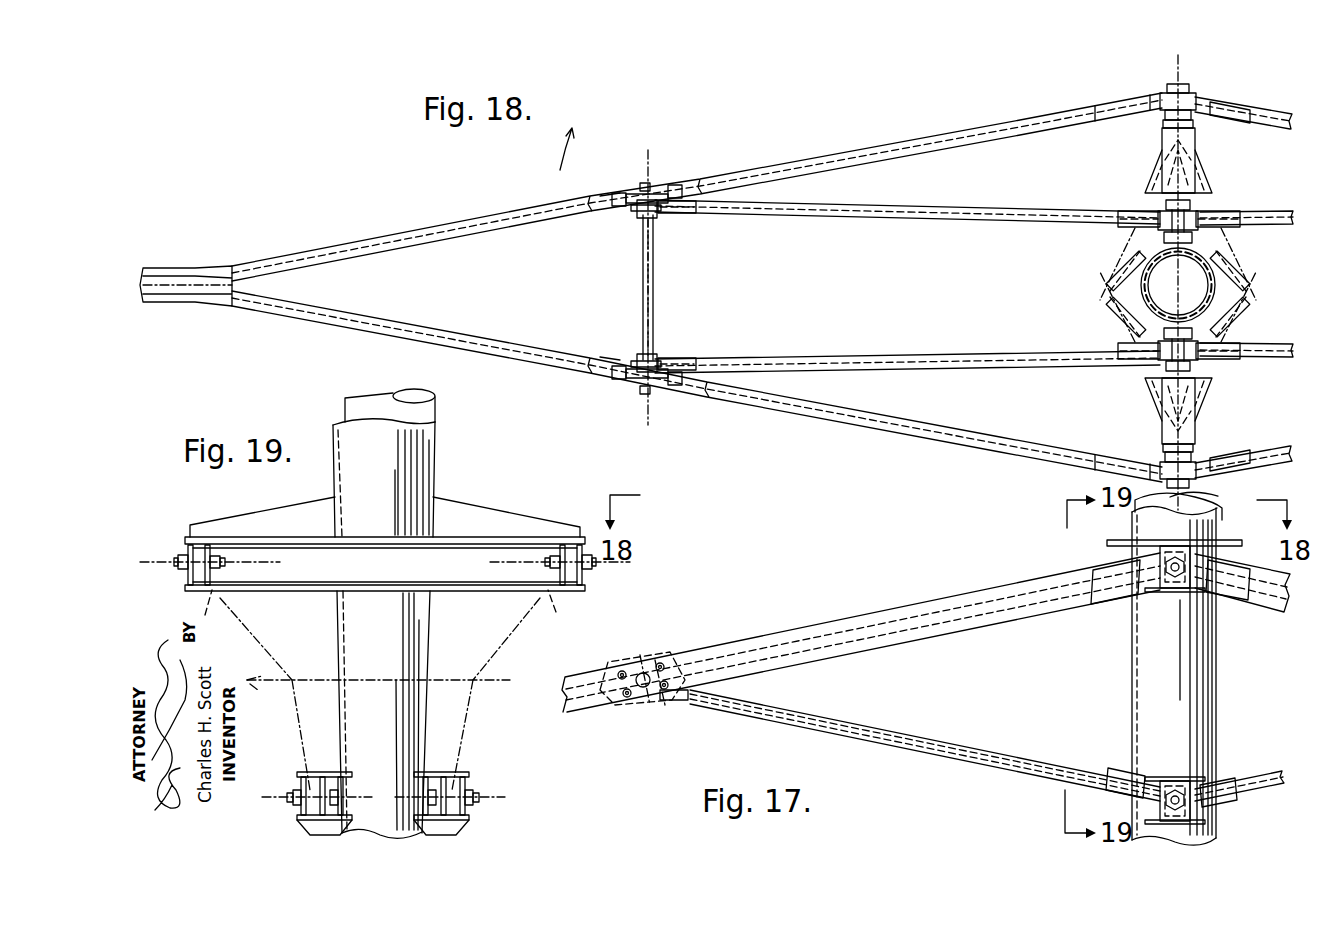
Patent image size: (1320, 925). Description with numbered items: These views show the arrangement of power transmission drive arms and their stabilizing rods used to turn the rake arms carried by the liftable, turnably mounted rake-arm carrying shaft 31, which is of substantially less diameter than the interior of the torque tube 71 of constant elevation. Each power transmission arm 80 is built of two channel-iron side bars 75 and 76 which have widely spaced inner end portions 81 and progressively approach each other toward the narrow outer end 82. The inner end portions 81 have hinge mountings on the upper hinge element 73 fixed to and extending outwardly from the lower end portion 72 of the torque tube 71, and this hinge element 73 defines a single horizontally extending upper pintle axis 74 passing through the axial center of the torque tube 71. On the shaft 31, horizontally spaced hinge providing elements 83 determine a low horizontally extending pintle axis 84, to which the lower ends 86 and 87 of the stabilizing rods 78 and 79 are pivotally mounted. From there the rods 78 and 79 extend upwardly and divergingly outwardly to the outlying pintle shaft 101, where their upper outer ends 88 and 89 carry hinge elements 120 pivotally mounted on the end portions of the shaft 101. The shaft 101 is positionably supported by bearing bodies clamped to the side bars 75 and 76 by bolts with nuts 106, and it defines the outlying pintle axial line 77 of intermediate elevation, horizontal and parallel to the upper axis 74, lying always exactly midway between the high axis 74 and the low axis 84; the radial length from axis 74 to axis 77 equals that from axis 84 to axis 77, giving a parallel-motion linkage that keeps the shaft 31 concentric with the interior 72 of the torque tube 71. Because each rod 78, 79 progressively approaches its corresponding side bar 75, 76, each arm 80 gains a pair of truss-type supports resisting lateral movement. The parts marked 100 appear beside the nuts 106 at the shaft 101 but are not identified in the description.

In FIG. 18, the rake-arm carrying shaft 31 is at (1178, 292).
In FIG. 19, the rake-arm carrying shaft 31 is at (436, 398).
In FIG. 17, the rake-arm carrying shaft 31 is at (1177, 668).
In FIG. 19, the torque tube 71 is at (490, 482).
In FIG. 19, the lower end portion of the torque tube 72 is at (438, 486).
In FIG. 18, the upper hinge element 73 is at (1178, 286).
In FIG. 19, the upper hinge element 73 is at (188, 548).
In FIG. 17, the upper hinge element 73 is at (1175, 595).
In FIG. 18, the upper pintle axis 74 is at (1175, 76).
In FIG. 19, the upper pintle axis 74 is at (162, 565).
In FIG. 17, the upper pintle axis 74 is at (1172, 590).
In FIG. 18, the channel-iron side bar 75 is at (487, 230).
In FIG. 18, the channel-iron side bar 76 is at (482, 338).
In FIG. 18, the outlying pintle axial line 77 is at (648, 173).
In FIG. 19, the outlying pintle axial line 77 is at (258, 678).
In FIG. 17, the outlying pintle axial line 77 is at (648, 692).
In FIG. 18, the stabilizing rod 78 is at (998, 207).
In FIG. 19, the stabilizing rod 78 is at (306, 712).
In FIG. 17, the stabilizing rod 78 is at (916, 736).
In FIG. 18, the stabilizing rod 79 is at (995, 364).
In FIG. 19, the stabilizing rod 79 is at (458, 712).
In FIG. 17, the stabilizing rod 79 is at (1008, 756).
In FIG. 18, the power transmission arm 80 is at (532, 280).
In FIG. 19, the power transmission arm 80 is at (262, 620).
In FIG. 17, the power transmission arm 80 is at (1030, 550).
In FIG. 18, the inner end portion of power transmission arm 81 is at (1082, 109).
In FIG. 19, the inner end portion of power transmission arm 81 is at (383, 611).
In FIG. 17, the inner end portion of power transmission arm 81 is at (1082, 576).
In FIG. 18, the narrow outer end of power transmission arm 82 is at (173, 268).
In FIG. 19, the lower central pintle providing element 83 is at (300, 808).
In FIG. 17, the lower central pintle providing element 83 is at (1180, 790).
In FIG. 18, the low pintle axis 84 is at (1160, 200).
In FIG. 19, the low pintle axis 84 is at (288, 792).
In FIG. 17, the low pintle axis 84 is at (1176, 790).
In FIG. 18, the lower end of stabilizing rod 86 is at (1113, 228).
In FIG. 17, the lower end of stabilizing rod 86 is at (1222, 782).
In FIG. 18, the lower end of stabilizing rod 87 is at (1113, 343).
In FIG. 17, the lower end of stabilizing rod 87 is at (1118, 775).
In FIG. 18, the upper outer end of stabilizing rod 88 is at (674, 215).
In FIG. 18, the upper outer end of stabilizing rod 89 is at (684, 359).
In FIG. 17, the upper outer end of stabilizing rod 89 is at (676, 700).
In FIG. 18, the nut 100 is at (640, 208).
In FIG. 18, the outlying pintle shaft 101 is at (655, 290).
In FIG. 17, the outlying pintle shaft 101 is at (645, 672).
In FIG. 18, the nut 106 is at (652, 185).
In FIG. 17, the nut 106 is at (620, 670).
In FIG. 18, the hinge element of stabilizing rod 120 is at (654, 220).
In FIG. 17, the hinge element of stabilizing rod 120 is at (656, 700).